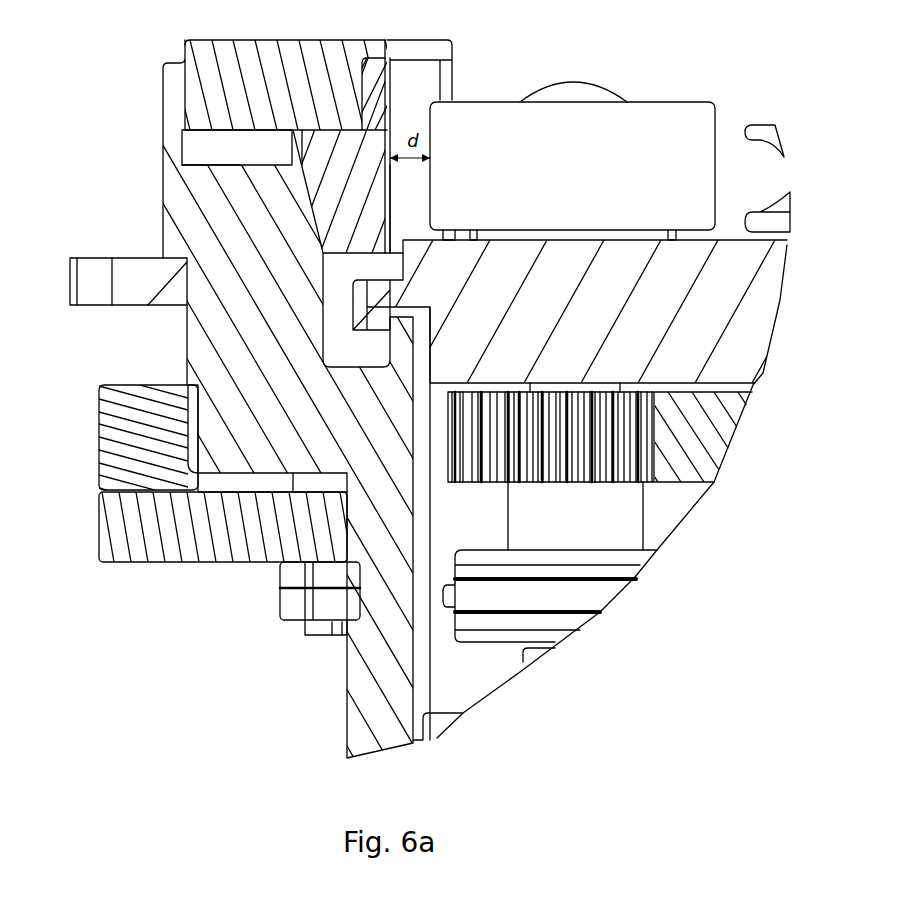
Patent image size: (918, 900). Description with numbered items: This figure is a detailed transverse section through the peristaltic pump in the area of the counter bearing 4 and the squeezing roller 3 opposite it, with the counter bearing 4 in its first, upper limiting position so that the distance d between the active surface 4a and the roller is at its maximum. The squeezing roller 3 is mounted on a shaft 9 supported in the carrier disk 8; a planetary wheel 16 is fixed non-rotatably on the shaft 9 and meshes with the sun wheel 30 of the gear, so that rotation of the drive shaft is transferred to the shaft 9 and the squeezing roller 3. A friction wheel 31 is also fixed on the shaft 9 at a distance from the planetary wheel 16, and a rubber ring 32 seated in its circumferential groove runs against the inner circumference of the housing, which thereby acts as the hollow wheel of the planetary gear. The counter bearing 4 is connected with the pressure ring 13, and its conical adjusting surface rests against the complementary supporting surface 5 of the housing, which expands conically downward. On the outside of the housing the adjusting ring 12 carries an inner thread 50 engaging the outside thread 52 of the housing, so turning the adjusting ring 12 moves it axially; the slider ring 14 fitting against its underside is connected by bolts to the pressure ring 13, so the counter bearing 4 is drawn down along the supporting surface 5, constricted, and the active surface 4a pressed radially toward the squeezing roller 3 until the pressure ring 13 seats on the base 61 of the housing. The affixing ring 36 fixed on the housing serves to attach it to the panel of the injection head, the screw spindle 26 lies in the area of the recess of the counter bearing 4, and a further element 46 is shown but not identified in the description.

The squeezing roller 3 is at (560, 178).
The counter bearing 4 is at (388, 113).
The active surface 4a is at (391, 185).
The supporting surface 5 is at (313, 218).
The carrier disk 8 is at (560, 316).
The shaft 9 is at (560, 533).
The adjusting ring 12 is at (117, 443).
The pressure ring 13 is at (213, 103).
The slider ring 14 is at (143, 542).
The planetary wheel 16 is at (483, 463).
The screw spindle 26 is at (177, 205).
The sun wheel 30 is at (717, 452).
The friction wheel 31 is at (570, 620).
The rubber ring 32 is at (598, 590).
The affixing ring 36 is at (133, 283).
The slot 46 is at (307, 193).
The inner thread 50 is at (183, 434).
The outside thread 52 is at (208, 420).
The base 61 is at (212, 157).